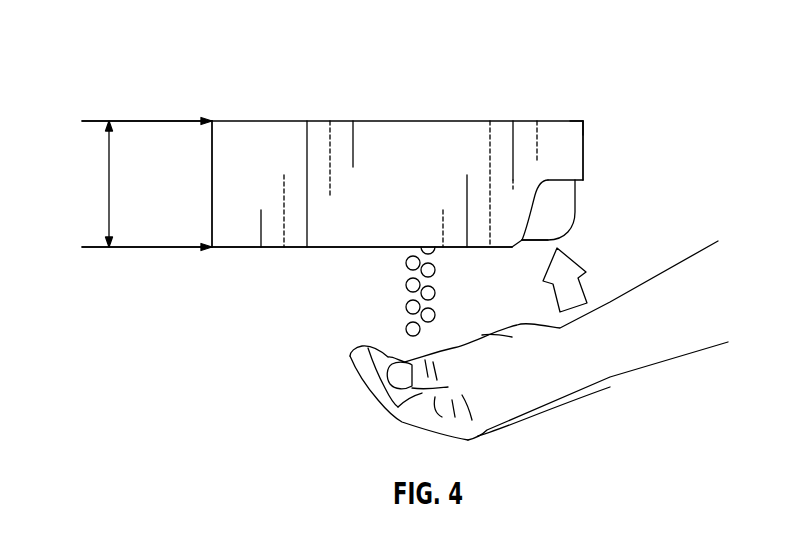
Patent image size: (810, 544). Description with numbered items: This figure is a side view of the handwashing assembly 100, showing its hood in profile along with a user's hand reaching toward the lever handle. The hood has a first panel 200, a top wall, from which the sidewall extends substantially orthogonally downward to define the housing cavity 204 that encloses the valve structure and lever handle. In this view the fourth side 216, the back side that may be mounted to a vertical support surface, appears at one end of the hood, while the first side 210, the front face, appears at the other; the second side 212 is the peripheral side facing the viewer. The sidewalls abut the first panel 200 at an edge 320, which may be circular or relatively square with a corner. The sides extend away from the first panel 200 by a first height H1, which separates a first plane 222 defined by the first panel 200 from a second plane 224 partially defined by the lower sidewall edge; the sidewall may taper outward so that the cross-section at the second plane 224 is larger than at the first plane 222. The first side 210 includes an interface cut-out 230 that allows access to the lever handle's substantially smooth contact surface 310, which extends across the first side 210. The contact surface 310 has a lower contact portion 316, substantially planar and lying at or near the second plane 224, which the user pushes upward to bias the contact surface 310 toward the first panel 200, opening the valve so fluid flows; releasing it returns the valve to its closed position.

The handwashing assembly 100 is at (203, 36).
The first height H1 is at (108, 177).
The first panel 200 is at (398, 121).
The housing cavity 204 is at (273, 252).
The first side 210 is at (584, 152).
The second side 212 is at (418, 196).
The fourth side 216 is at (212, 183).
The first plane 222 is at (167, 121).
The second plane 224 is at (165, 247).
The interface cut-out 230 is at (594, 189).
The contact surface 310 is at (578, 210).
The lower contact portion 316 is at (534, 242).
The edge 320 is at (586, 120).